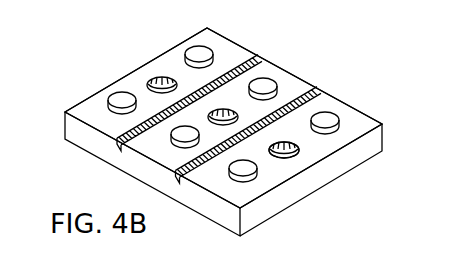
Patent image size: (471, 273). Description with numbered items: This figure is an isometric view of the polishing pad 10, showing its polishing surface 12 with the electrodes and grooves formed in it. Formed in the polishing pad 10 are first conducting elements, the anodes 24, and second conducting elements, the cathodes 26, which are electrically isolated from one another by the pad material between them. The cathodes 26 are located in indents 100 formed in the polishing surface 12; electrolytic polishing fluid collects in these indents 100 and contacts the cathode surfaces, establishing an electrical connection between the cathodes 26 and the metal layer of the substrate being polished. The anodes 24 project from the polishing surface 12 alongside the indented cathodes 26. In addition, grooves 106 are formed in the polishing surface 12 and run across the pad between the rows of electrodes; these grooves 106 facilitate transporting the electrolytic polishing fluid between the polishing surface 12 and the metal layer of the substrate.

The polishing pad 10 is at (378, 140).
The polishing surface 12 is at (367, 116).
The anodes 24 is at (334, 114).
The cathodes 26 is at (298, 158).
The indents 100 is at (281, 159).
The grooves 106 is at (268, 46).